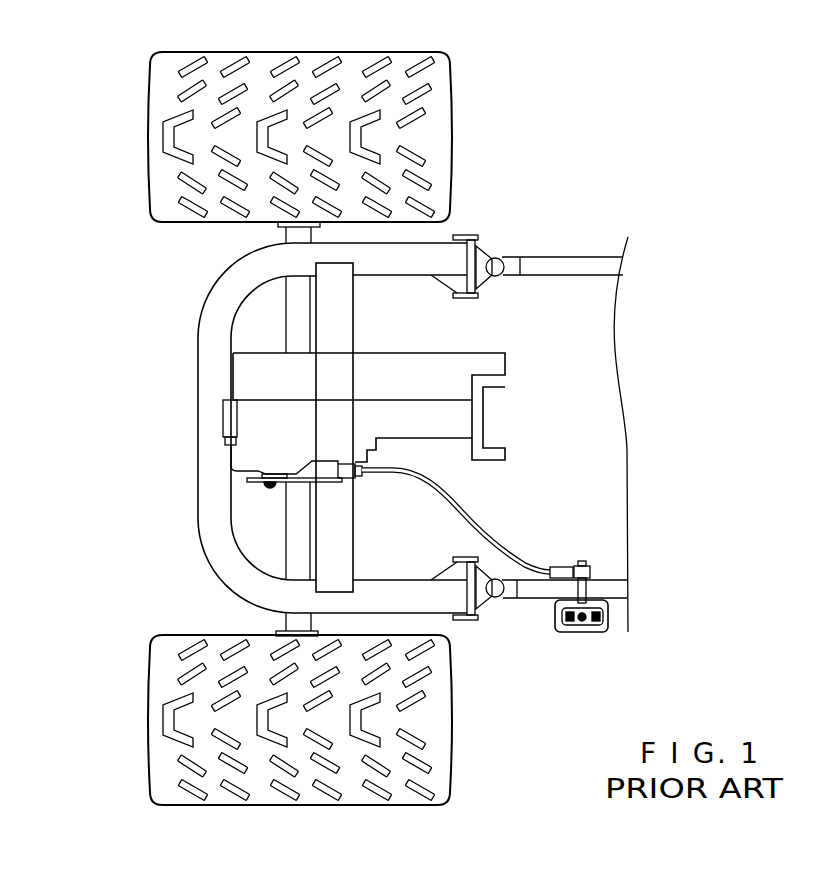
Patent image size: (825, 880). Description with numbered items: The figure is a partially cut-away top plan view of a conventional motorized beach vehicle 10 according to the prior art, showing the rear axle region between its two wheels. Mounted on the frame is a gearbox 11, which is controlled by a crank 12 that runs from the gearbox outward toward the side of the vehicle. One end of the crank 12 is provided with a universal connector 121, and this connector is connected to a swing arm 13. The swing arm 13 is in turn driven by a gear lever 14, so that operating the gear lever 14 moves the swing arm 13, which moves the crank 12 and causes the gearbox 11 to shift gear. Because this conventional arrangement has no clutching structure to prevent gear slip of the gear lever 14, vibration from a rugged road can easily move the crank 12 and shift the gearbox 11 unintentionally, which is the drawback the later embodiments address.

The motorized beach vehicle 10 is at (595, 249).
The gearbox 11 is at (252, 434).
The crank 12 is at (460, 508).
The swing arm 13 is at (568, 565).
The universal connector 121 is at (592, 572).
The gear lever 14 is at (582, 633).